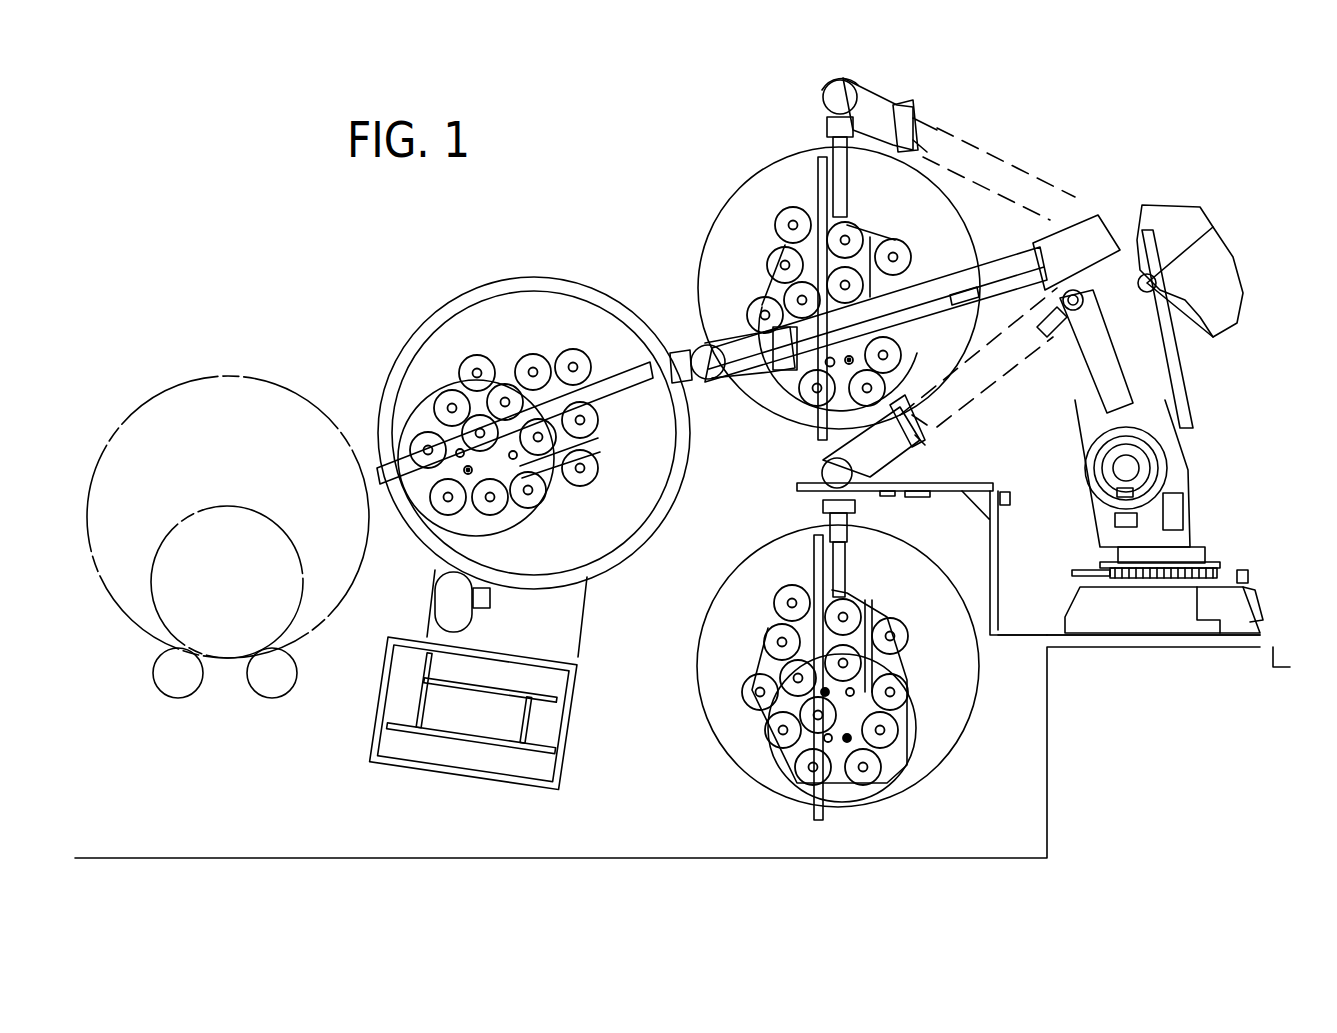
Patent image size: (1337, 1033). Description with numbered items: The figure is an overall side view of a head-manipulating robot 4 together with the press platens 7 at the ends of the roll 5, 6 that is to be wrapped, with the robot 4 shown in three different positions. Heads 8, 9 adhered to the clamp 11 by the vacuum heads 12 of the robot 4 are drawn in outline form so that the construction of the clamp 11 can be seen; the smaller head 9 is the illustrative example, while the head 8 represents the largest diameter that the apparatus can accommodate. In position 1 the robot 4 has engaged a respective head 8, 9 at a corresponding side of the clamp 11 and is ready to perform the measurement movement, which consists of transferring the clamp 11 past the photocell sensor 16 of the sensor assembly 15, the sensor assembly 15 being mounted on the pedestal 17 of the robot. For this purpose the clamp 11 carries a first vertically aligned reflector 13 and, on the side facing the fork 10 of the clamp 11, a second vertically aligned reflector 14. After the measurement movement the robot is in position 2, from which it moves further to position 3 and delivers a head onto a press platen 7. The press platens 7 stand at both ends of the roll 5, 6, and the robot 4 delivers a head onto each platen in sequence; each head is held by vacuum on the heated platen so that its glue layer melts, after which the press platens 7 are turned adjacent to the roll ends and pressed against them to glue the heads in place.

The position 1 is at (798, 91).
The position 2 is at (800, 475).
The position 3 is at (678, 327).
The head-manipulating robot 4 is at (1273, 422).
The roll 5 is at (244, 585).
The roll 6 is at (222, 385).
The press platen 7 is at (441, 317).
The head 8 is at (827, 659).
The head 9 is at (912, 748).
The fork of the clamp 10 is at (830, 532).
The clamp 11 is at (860, 800).
The vacuum heads 12 is at (742, 690).
The first vertical reflector 13 is at (813, 812).
The second vertical reflector 14 is at (867, 617).
The sensor assembly 15 is at (998, 545).
The photocell sensor 16 is at (895, 497).
The pedestal 17 is at (1260, 653).